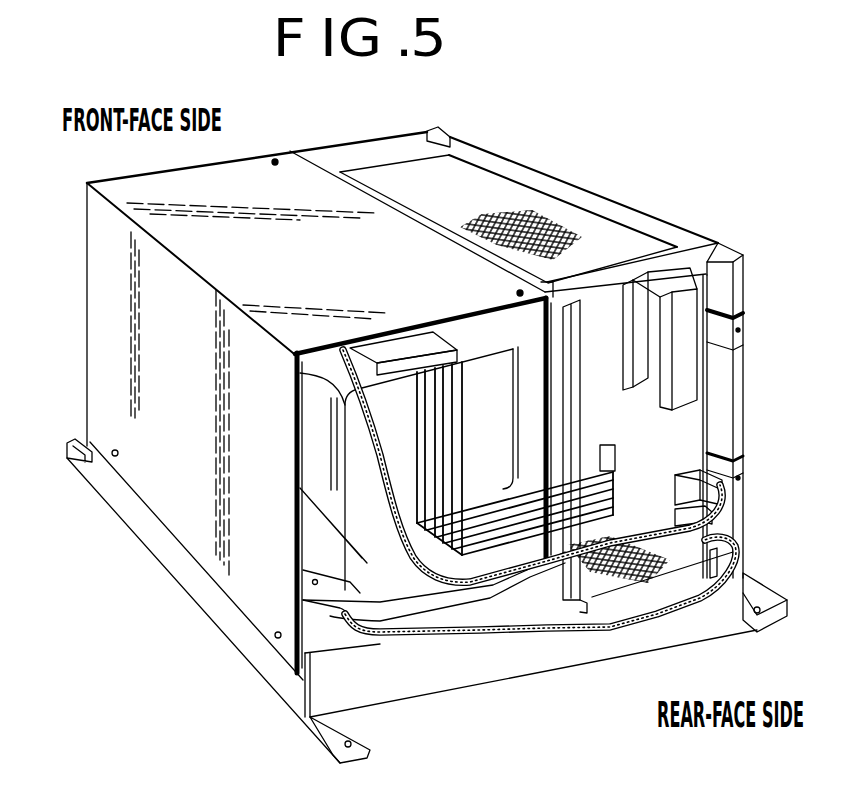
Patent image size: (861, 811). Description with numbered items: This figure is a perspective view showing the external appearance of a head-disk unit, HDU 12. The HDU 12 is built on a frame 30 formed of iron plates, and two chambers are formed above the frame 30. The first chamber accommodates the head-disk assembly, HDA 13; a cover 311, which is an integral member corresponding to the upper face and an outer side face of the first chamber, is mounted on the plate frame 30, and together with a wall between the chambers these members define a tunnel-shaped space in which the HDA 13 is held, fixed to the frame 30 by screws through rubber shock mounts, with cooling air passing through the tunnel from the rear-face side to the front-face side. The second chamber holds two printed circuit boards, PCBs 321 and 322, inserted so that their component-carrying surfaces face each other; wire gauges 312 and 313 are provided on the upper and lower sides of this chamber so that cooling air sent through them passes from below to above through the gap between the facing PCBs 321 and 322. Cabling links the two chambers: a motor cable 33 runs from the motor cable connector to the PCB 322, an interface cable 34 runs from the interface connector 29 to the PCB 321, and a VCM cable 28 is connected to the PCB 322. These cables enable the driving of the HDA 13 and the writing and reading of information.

The head-disk unit (HDU) 12 is at (511, 153).
The head-disk assembly (HDA) 13 is at (362, 468).
The VCM cable 28 is at (560, 552).
The interface connector 29 is at (408, 338).
The frame 30 is at (422, 675).
The motor cable 33 is at (487, 640).
The interface cable 34 is at (515, 535).
The cover 311 is at (117, 284).
The wire gauge 312 is at (637, 577).
The wire gauge 313 is at (547, 222).
The printed circuit board (PCB) 321 is at (577, 333).
The printed circuit board (PCB) 322 is at (707, 417).